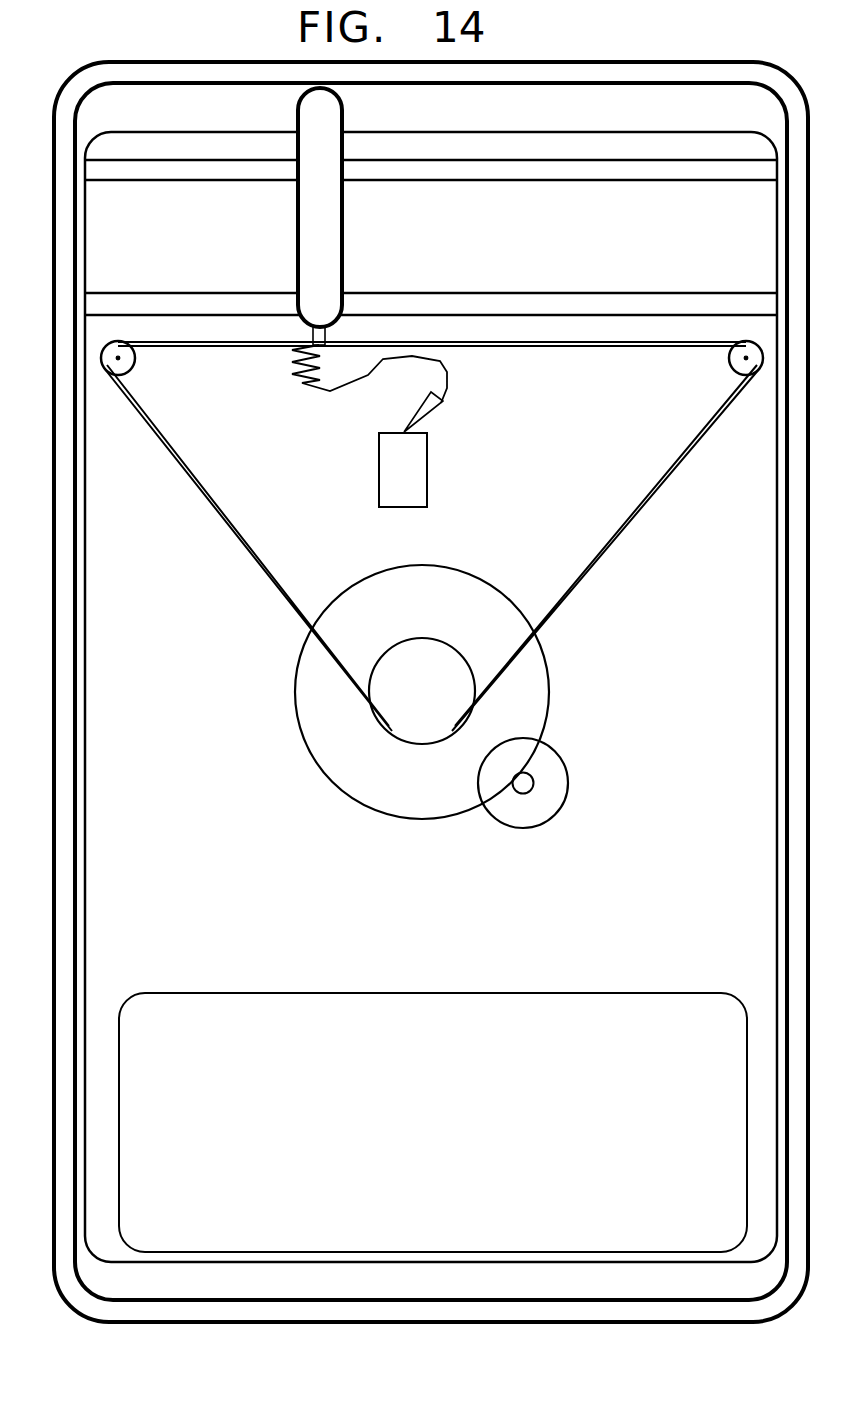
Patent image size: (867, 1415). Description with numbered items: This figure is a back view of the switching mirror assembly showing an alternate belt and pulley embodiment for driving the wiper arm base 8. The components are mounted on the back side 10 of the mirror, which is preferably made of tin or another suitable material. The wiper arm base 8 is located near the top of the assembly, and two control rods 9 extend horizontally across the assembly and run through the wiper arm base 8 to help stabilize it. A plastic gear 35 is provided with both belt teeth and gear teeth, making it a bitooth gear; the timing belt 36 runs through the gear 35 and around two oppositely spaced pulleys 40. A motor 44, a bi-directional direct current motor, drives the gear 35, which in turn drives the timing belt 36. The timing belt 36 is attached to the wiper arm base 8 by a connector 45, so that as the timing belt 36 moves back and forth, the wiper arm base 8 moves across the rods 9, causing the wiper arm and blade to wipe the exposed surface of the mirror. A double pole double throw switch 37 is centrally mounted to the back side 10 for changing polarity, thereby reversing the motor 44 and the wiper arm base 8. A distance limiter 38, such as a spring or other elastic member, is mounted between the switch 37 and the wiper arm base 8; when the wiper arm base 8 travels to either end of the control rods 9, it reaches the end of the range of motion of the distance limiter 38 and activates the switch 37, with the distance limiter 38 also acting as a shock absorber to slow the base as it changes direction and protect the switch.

The wiper arm base 8 is at (328, 210).
The control rods 9 is at (541, 180).
The back side 10 is at (255, 913).
The plastic gear 35 is at (428, 621).
The timing belt 36 is at (216, 499).
The DPDT switch 37 is at (427, 471).
The distance limiter 38 is at (297, 378).
The pulleys 40 is at (134, 362).
The motor 44 is at (558, 782).
The connector 45 is at (328, 332).